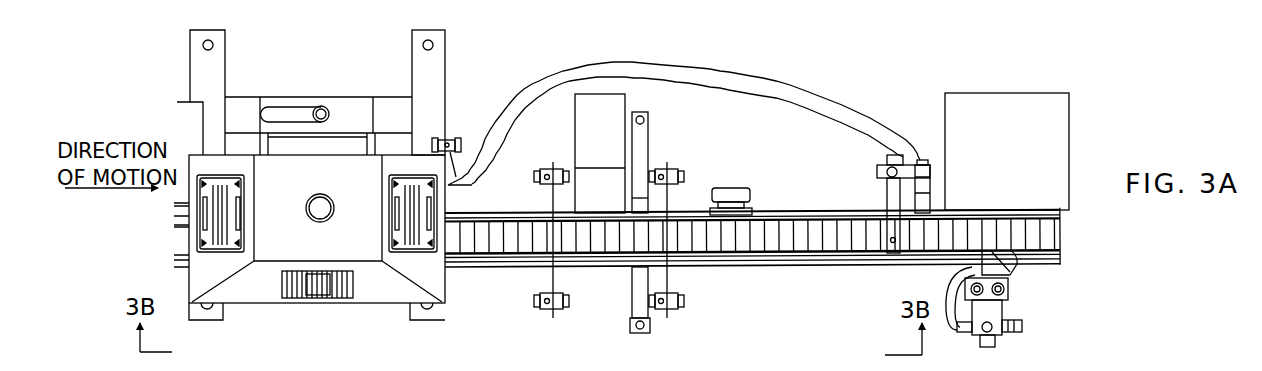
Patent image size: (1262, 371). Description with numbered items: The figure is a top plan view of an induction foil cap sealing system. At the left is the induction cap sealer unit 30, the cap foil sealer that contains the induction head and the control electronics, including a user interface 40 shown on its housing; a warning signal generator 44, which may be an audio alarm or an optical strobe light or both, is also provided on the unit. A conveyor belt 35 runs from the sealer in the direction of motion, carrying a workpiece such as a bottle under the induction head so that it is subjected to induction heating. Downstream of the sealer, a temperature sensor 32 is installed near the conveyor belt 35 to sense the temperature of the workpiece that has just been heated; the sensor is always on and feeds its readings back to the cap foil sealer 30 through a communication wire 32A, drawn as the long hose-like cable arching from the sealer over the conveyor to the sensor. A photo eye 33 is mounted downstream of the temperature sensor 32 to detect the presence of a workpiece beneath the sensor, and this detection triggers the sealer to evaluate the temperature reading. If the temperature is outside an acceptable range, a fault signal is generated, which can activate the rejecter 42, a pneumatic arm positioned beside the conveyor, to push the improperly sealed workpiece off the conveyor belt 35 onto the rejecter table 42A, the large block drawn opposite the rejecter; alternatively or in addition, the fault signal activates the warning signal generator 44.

The induction cap sealer unit 30 is at (262, 303).
The temperature sensor 32 is at (887, 190).
The communication wire 32A is at (768, 102).
The photo eye 33 is at (930, 185).
The conveyor belt 35 is at (485, 213).
The user interface 40 is at (352, 283).
The rejecter 42 is at (1002, 337).
The rejecter table 42A is at (997, 102).
The warning signal generator 44 is at (311, 197).